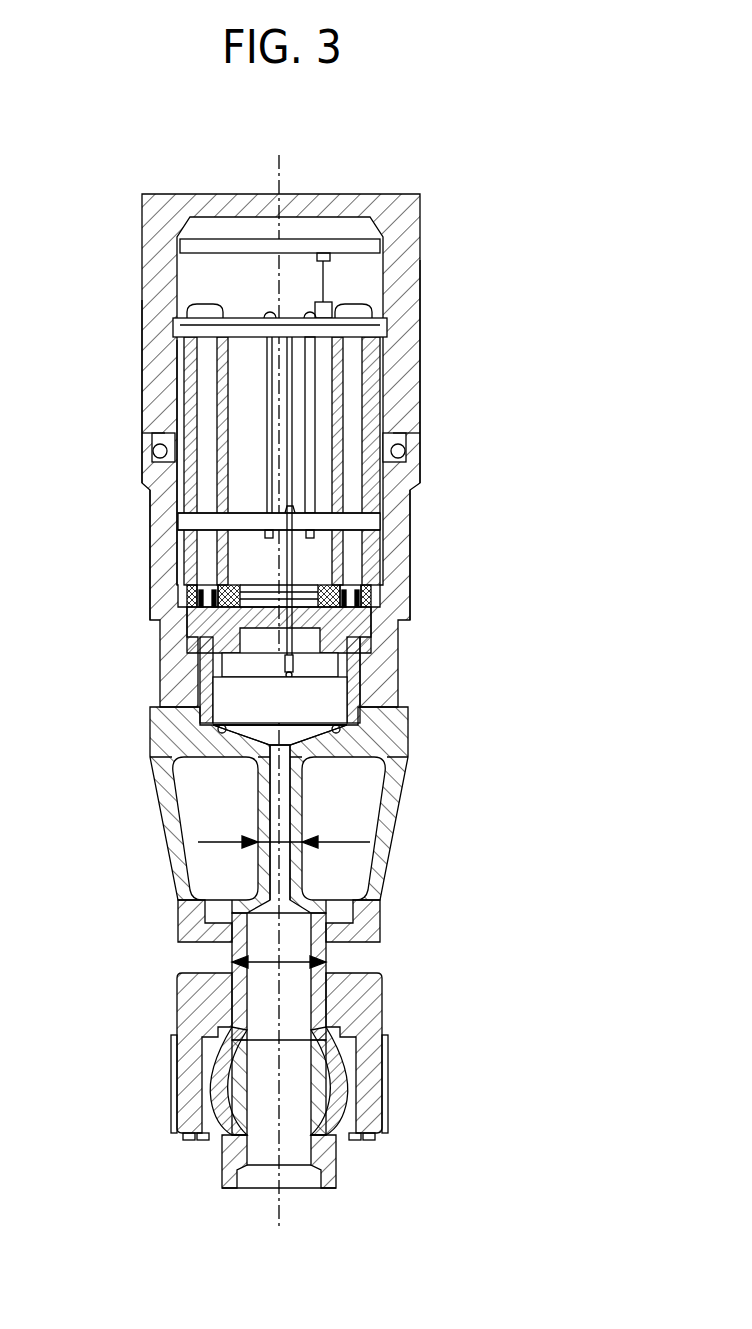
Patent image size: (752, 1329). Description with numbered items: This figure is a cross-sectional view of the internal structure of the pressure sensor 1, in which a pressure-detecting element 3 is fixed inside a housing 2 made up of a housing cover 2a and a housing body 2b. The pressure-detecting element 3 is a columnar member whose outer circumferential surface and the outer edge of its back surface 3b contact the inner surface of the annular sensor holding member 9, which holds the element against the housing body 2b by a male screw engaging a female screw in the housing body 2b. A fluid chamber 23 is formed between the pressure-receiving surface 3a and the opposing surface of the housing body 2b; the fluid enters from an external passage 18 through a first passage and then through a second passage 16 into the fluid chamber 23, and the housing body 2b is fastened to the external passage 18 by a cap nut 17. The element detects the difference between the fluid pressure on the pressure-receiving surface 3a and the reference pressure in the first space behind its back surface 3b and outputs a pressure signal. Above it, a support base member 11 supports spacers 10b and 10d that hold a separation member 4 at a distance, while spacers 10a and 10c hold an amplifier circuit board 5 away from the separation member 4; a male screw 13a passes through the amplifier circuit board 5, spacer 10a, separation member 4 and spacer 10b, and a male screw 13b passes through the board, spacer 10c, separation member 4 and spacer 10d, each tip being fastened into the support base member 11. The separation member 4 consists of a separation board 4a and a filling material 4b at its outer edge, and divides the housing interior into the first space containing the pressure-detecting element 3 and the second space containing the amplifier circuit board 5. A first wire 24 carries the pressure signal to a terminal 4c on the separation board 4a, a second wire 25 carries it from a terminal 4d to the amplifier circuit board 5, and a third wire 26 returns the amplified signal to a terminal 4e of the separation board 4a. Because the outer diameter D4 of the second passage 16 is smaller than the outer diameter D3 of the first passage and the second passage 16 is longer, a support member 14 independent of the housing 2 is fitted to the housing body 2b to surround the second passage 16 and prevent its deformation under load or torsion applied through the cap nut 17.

The pressure sensor 1 is at (470, 167).
The housing 2 is at (48, 372).
The housing cover 2a is at (142, 392).
The housing body 2b is at (152, 450).
The pressure-detecting element 3 is at (335, 694).
The pressure-receiving surface 3a is at (330, 758).
The back surface 3b is at (230, 663).
The separation member 4 is at (485, 470).
The separation board 4a is at (383, 526).
The filling material 4b is at (383, 515).
The terminal 4c is at (288, 507).
The terminal 4d is at (262, 536).
The terminal 4e is at (318, 535).
The amplifier circuit board 5 is at (290, 330).
The sensor holding member 9 is at (377, 633).
The spacer 10a is at (383, 362).
The spacer 10b is at (383, 574).
The spacer 10c is at (177, 372).
The spacer 10d is at (185, 572).
The support base member 11 is at (372, 597).
The male screw 13a is at (352, 314).
The male screw 13b is at (205, 312).
The support member 14 is at (400, 820).
The second passage 16 is at (278, 803).
The cap nut 17 is at (383, 1000).
The external passage 18 is at (300, 1157).
The fluid chamber 23 is at (250, 727).
The first wire 24 is at (286, 630).
The second wire 25 is at (258, 378).
The third wire 26 is at (316, 402).
The diameter of the first passage D3 is at (279, 978).
The diameter of the second passage D4 is at (284, 827).